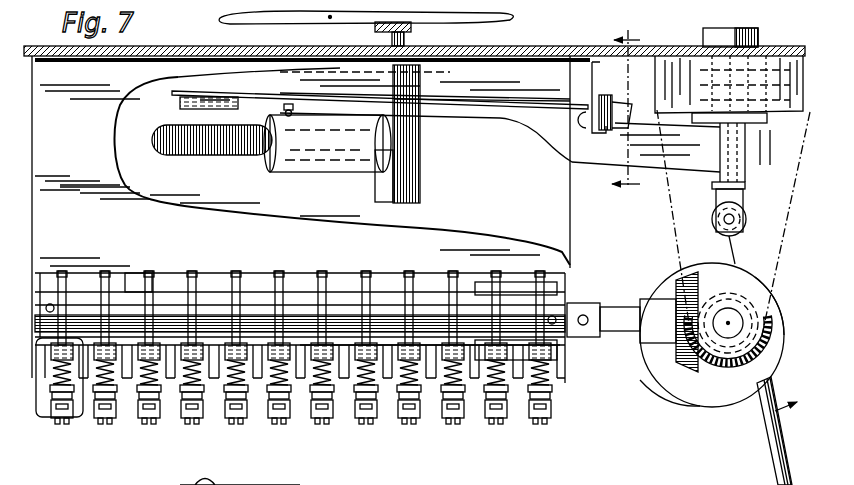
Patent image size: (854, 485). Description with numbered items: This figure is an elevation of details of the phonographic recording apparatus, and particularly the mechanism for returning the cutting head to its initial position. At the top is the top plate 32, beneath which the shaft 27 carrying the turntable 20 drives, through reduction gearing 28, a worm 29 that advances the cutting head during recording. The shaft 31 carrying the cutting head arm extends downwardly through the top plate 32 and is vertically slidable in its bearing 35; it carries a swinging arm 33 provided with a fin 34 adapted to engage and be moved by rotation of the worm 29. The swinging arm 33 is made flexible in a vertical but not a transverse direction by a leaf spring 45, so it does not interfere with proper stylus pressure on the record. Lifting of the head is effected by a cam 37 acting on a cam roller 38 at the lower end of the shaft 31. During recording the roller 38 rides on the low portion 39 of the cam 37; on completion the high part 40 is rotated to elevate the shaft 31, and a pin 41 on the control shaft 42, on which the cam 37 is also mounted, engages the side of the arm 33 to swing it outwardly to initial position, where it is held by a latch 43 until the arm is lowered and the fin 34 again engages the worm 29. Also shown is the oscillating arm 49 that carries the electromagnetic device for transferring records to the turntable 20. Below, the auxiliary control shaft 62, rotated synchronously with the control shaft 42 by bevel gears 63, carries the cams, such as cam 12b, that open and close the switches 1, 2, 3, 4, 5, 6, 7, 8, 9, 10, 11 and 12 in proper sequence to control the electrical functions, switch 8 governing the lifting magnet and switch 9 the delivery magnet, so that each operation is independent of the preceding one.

The switch 1 is at (62, 359).
The switch 2 is at (105, 359).
The switch 3 is at (149, 359).
The switch 4 is at (192, 359).
The switch 5 is at (236, 359).
The switch 6 is at (279, 359).
The switch 7 is at (322, 359).
The switch 8 is at (366, 359).
The switch 9 is at (409, 359).
The switch 10 is at (630, 117).
The switch 11 is at (496, 359).
The switch 12 is at (540, 359).
The key bar 12b is at (428, 281).
The turntable 20 is at (381, 30).
The shaft 27 is at (405, 40).
The reduction gearing 28 is at (312, 172).
The worm 29 is at (196, 157).
The shaft 31 is at (724, 46).
The top plate 32 is at (590, 58).
The swinging arm 33 is at (233, 95).
The fin 34 is at (180, 100).
The bearing 35 is at (760, 42).
The cam 37 is at (684, 394).
The cam roller 38 is at (748, 221).
The low portion 39 is at (784, 322).
The high part 40 is at (657, 276).
The pin 41 is at (773, 447).
The control shaft 42 is at (732, 323).
The latch 43 is at (607, 120).
The leaf spring 45 is at (290, 103).
The oscillating arm 49 is at (275, 474).
The auxiliary control shaft 62 is at (445, 300).
The bevel gears 63 is at (678, 362).